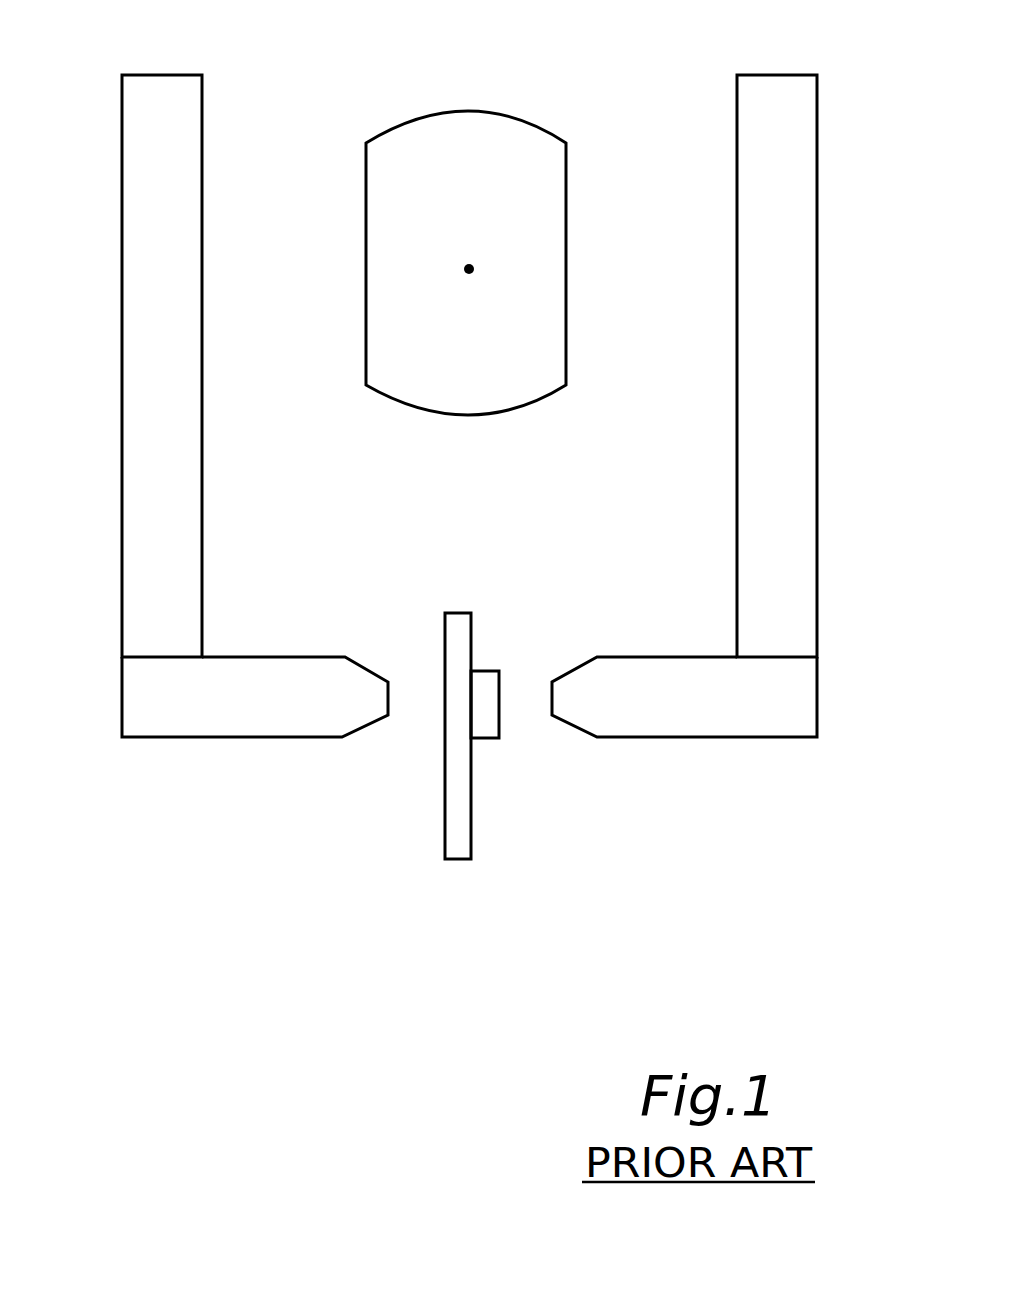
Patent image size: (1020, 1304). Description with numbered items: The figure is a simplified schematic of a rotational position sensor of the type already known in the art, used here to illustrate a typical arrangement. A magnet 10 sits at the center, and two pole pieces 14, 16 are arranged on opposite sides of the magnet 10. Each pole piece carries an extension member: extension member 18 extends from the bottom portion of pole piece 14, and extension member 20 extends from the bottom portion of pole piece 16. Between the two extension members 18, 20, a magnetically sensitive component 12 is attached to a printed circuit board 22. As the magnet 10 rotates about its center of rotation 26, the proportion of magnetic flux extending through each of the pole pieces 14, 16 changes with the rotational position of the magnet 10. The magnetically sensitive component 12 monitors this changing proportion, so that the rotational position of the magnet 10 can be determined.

The magnet 10 is at (527, 155).
The magnetically sensitive component 12 is at (488, 712).
The pole piece 14 is at (140, 253).
The pole piece 16 is at (795, 244).
The extension member 18 is at (240, 720).
The extension member 20 is at (712, 727).
The printed circuit board 22 is at (459, 833).
The center of rotation 26 is at (464, 269).